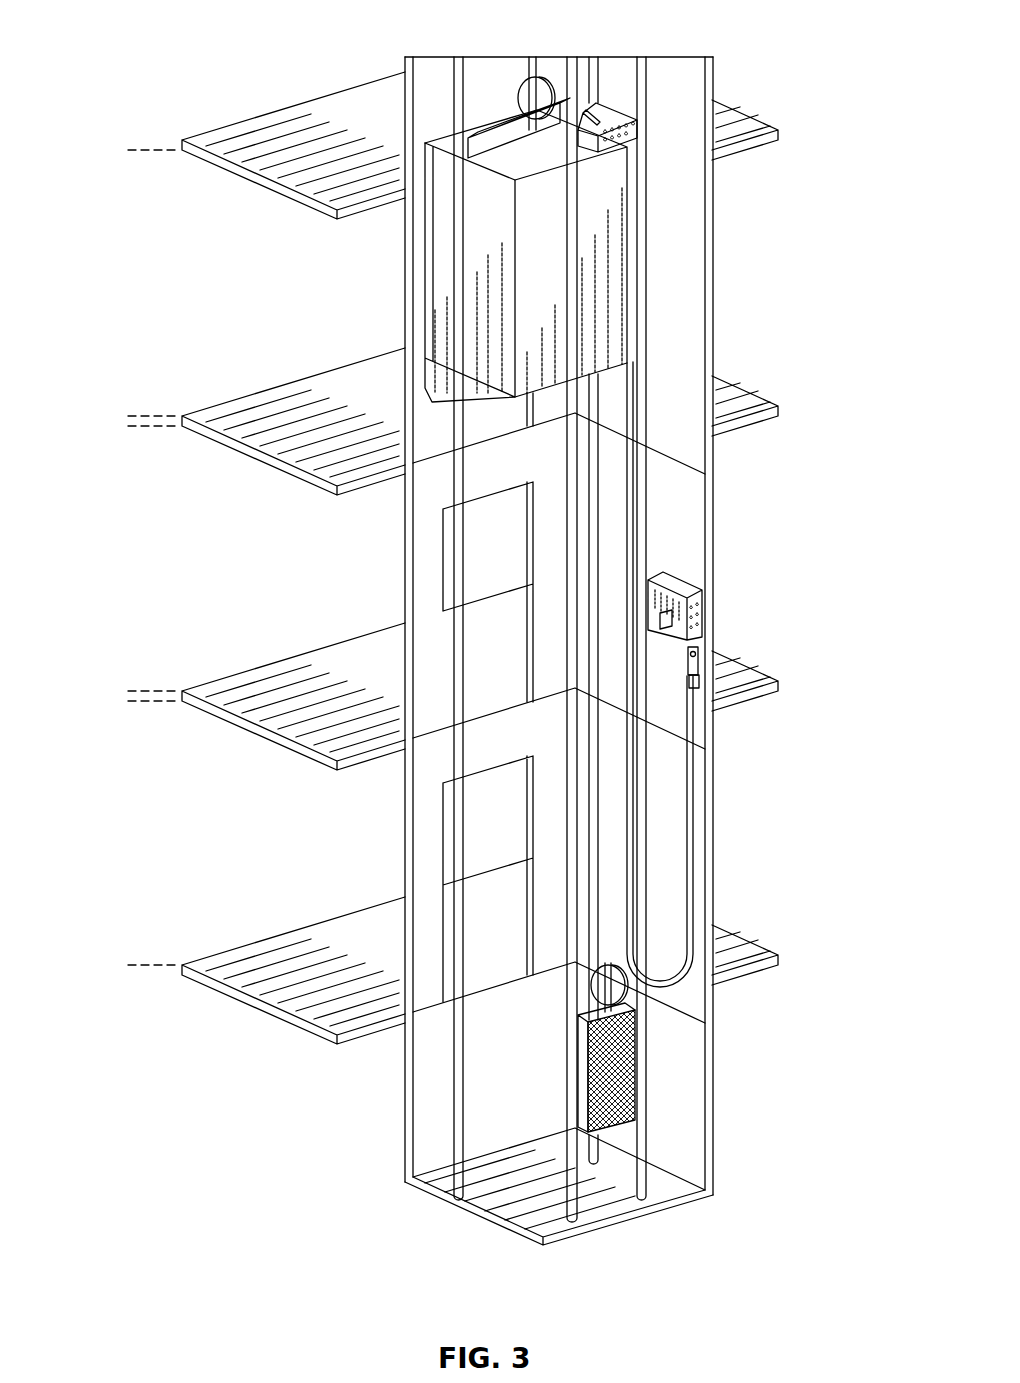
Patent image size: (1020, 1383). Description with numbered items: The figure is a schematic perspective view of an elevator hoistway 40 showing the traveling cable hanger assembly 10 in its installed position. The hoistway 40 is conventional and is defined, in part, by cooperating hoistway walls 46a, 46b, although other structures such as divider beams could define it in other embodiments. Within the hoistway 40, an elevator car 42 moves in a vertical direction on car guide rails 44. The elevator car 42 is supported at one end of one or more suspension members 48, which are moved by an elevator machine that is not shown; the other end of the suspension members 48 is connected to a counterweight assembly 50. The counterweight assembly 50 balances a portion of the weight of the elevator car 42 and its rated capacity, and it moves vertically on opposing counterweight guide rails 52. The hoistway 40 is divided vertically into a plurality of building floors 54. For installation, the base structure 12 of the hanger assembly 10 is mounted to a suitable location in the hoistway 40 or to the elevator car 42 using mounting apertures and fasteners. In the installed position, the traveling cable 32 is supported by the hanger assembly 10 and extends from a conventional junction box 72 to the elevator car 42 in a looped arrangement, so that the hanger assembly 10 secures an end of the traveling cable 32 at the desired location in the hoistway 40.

The hanger assembly 10 is at (698, 665).
The base structure 12 is at (699, 676).
The traveling cable 32 is at (700, 850).
The elevator hoistway 40 is at (517, 1220).
The elevator car 42 is at (603, 288).
The car guide rails 44 is at (570, 663).
The hoistway wall 46a is at (424, 1145).
The hoistway wall 46b is at (690, 1112).
The suspension members 48 is at (528, 58).
The counterweight assembly 50 is at (635, 1103).
The counterweight guide rails 52 is at (585, 1147).
The building floors 54 is at (128, 150).
The junction box 72 is at (698, 618).